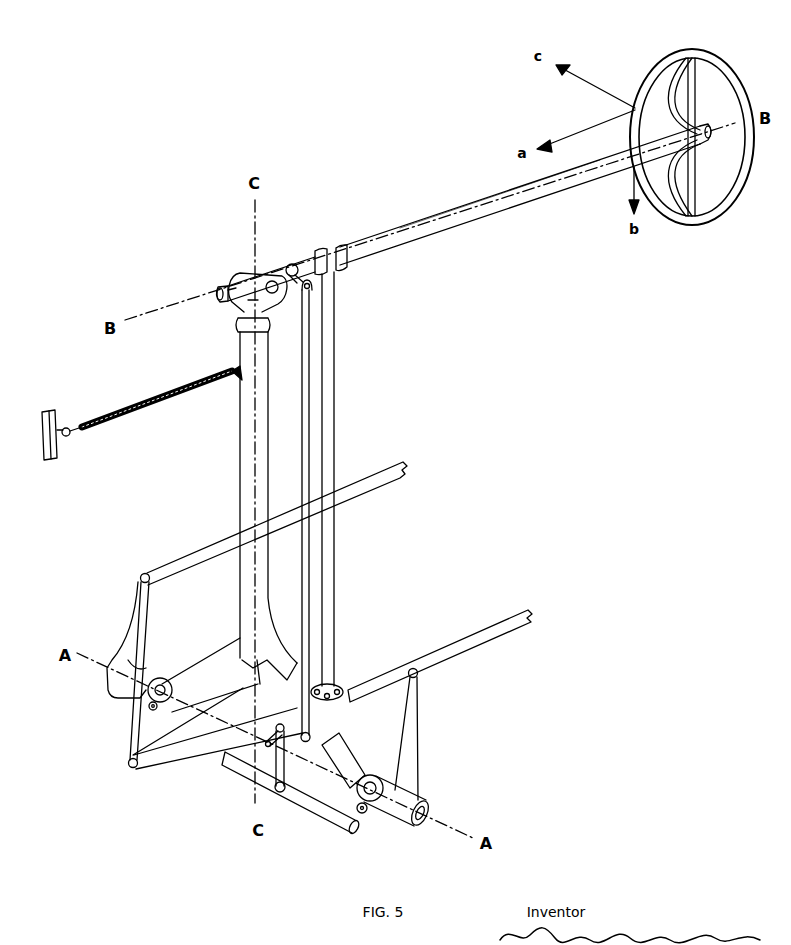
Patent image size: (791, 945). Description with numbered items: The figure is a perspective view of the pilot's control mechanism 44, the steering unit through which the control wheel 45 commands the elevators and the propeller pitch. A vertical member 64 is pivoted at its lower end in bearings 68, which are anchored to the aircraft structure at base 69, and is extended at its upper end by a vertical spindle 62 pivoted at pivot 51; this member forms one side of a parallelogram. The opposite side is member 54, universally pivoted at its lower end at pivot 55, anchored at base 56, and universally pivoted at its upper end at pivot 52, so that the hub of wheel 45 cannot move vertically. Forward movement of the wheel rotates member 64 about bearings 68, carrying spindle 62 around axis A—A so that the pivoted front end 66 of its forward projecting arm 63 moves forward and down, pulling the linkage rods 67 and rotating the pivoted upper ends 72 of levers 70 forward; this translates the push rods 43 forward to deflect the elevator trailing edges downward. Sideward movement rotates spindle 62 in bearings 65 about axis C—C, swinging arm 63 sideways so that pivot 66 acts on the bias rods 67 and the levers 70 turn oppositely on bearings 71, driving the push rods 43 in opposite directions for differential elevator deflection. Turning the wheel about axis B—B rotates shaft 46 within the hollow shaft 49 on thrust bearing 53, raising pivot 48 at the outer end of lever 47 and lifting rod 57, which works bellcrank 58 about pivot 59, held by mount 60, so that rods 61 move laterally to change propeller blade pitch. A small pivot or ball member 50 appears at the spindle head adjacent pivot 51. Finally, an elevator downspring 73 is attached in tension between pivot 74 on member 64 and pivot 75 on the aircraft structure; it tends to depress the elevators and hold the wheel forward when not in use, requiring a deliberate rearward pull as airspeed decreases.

The push rods 43 is at (379, 490).
The pilot's control mechanism 44 is at (452, 218).
The wheel 45 is at (710, 57).
The shaft 46 is at (707, 127).
The lever 47 is at (303, 284).
The pivot 48 is at (307, 291).
The hollow shaft 49 is at (445, 211).
The ball 50 is at (292, 264).
The pivot 51 is at (272, 281).
The pivot 52 is at (340, 250).
The thrust bearing 53 is at (226, 298).
The member 54 is at (336, 398).
The pivot 55 is at (332, 686).
The base 56 is at (340, 691).
The rod 57 is at (302, 416).
The bellcrank 58 is at (286, 760).
The pivot 59 is at (266, 738).
The mount 60 is at (272, 744).
The rods 61 is at (280, 784).
The vertical spindle 62 is at (248, 310).
The forward projecting arm 63 is at (150, 742).
The vertical member 64 is at (240, 483).
The bearings 65 is at (242, 331).
The pivoted front end 66 is at (130, 768).
The linkage rods 67 is at (153, 752).
The bearings 68 is at (163, 679).
The base 69 is at (364, 812).
The levers 70 is at (127, 625).
The bearings 71 is at (429, 812).
The pivoted upper ends 72 is at (141, 580).
The elevator downspring 73 is at (149, 407).
The pivot 74 is at (238, 376).
The pivot 75 is at (61, 438).